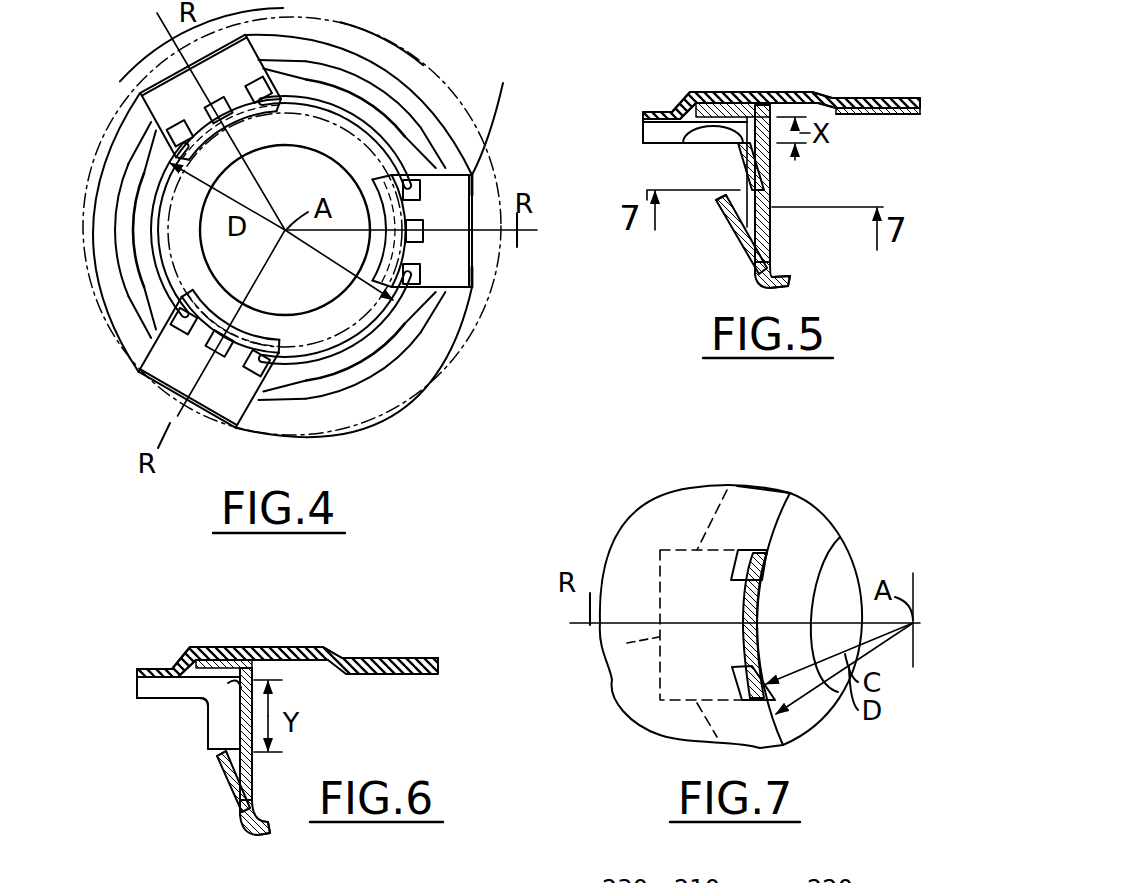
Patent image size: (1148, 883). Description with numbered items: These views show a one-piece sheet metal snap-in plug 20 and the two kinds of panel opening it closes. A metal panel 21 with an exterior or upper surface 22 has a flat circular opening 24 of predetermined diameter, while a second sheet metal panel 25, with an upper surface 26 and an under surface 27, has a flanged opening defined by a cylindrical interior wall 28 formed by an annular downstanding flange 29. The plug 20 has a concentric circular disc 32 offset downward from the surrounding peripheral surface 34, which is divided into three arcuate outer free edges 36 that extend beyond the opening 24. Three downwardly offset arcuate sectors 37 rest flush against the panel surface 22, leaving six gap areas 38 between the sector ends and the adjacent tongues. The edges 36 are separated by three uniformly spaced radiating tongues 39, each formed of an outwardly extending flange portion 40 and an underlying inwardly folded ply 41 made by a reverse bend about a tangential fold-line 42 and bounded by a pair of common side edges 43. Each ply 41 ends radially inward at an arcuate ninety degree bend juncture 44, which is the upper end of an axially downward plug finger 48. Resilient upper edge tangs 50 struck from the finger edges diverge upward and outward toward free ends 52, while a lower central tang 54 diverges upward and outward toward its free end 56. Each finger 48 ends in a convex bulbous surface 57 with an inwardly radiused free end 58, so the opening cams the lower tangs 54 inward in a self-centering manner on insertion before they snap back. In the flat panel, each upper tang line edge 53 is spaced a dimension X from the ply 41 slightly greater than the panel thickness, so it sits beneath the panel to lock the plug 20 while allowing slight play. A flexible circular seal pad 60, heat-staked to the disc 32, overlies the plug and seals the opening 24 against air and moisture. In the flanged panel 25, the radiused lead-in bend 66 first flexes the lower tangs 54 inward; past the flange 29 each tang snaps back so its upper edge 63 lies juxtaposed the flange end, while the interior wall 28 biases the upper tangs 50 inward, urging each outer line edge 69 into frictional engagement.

In FIG. 4, the snap-in plug 20 is at (355, 62).
In FIG. 5, the snap-in plug 20 is at (904, 121).
In FIG. 6, the snap-in plug 20 is at (397, 681).
In FIG. 7, the snap-in plug 20 is at (819, 511).
In FIG. 5, the metal panel 21 is at (666, 112).
In FIG. 7, the metal panel 21 is at (661, 491).
In FIG. 5, the exterior or upper surface 22 is at (657, 143).
In FIG. 7, the exterior or upper surface 22 is at (743, 490).
In FIG. 4, the circular flat opening 24 is at (348, 122).
In FIG. 5, the circular flat opening 24 is at (806, 130).
In FIG. 7, the circular flat opening 24 is at (792, 496).
In FIG. 6, the sheet metal panel 25 is at (135, 691).
In FIG. 6, the upper surface 26 is at (148, 668).
In FIG. 6, the under surface 27 is at (150, 703).
In FIG. 6, the cylindrical interior wall 28 is at (218, 751).
In FIG. 6, the annular downstanding flange 29 is at (206, 722).
In FIG. 4, the circular disc 32 is at (264, 230).
In FIG. 5, the circular disc 32 is at (887, 119).
In FIG. 6, the circular disc 32 is at (422, 658).
In FIG. 7, the circular disc 32 is at (850, 562).
In FIG. 4, the peripheral surface 34 is at (338, 156).
In FIG. 6, the peripheral surface 34 is at (328, 652).
In FIG. 4, the arcuate edge sections 36 is at (378, 78).
In FIG. 4, the downwardly offset arcuate sectors 37 is at (408, 103).
In FIG. 4, the gap areas 38 is at (492, 100).
In FIG. 4, the tongues 39 is at (163, 70).
In FIG. 5, the tongues 39 is at (777, 91).
In FIG. 6, the tongues 39 is at (308, 646).
In FIG. 7, the tongues 39 is at (649, 569).
In FIG. 5, the flange portion 40 is at (713, 103).
In FIG. 6, the flange portion 40 is at (221, 657).
In FIG. 4, the inwardly folded ply 41 is at (243, 42).
In FIG. 5, the inwardly folded ply 41 is at (700, 104).
In FIG. 6, the inwardly folded ply 41 is at (194, 660).
In FIG. 4, the tangential fold-line 42 is at (473, 160).
In FIG. 5, the tangential fold-line 42 is at (664, 111).
In FIG. 6, the tangential fold-line 42 is at (169, 662).
In FIG. 7, the tangential fold-line 42 is at (627, 643).
In FIG. 4, the common side edges 43 is at (262, 60).
In FIG. 5, the bend juncture 44 is at (805, 100).
In FIG. 7, the bend juncture 44 is at (762, 608).
In FIG. 5, the plug finger 48 is at (776, 228).
In FIG. 6, the plug finger 48 is at (237, 812).
In FIG. 7, the plug finger 48 is at (766, 568).
In FIG. 4, the upper edge tang 50 is at (349, 235).
In FIG. 5, the upper edge tang 50 is at (783, 207).
In FIG. 6, the upper edge tang 50 is at (206, 767).
In FIG. 7, the upper edge tang 50 is at (748, 612).
In FIG. 5, the upper free end 52 is at (700, 143).
In FIG. 6, the upper free end 52 is at (250, 665).
In FIG. 5, the upper tang line edge 53 is at (747, 103).
In FIG. 4, the lower central tang 54 is at (216, 113).
In FIG. 5, the lower central tang 54 is at (738, 238).
In FIG. 6, the lower central tang 54 is at (226, 778).
In FIG. 5, the upper free end 56 is at (718, 200).
In FIG. 6, the upper free end 56 is at (217, 758).
In FIG. 5, the convex bulbous surface 57 is at (780, 289).
In FIG. 6, the convex bulbous surface 57 is at (241, 828).
In FIG. 5, the inwardly radiused free end 58 is at (792, 280).
In FIG. 6, the inwardly radiused free end 58 is at (272, 835).
In FIG. 5, the seal pad 60 is at (878, 96).
In FIG. 5, the upper edge 63 is at (773, 198).
In FIG. 6, the upper edge 63 is at (254, 768).
In FIG. 6, the radiused lead-in bend 66 is at (242, 678).
In FIG. 5, the upper tang outer line edge 69 is at (743, 150).
In FIG. 6, the upper tang outer line edge 69 is at (145, 700).